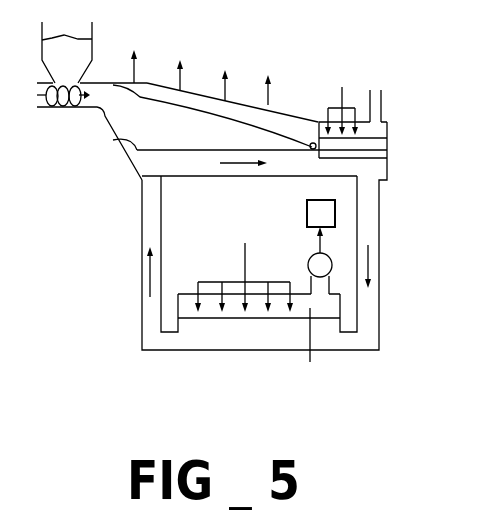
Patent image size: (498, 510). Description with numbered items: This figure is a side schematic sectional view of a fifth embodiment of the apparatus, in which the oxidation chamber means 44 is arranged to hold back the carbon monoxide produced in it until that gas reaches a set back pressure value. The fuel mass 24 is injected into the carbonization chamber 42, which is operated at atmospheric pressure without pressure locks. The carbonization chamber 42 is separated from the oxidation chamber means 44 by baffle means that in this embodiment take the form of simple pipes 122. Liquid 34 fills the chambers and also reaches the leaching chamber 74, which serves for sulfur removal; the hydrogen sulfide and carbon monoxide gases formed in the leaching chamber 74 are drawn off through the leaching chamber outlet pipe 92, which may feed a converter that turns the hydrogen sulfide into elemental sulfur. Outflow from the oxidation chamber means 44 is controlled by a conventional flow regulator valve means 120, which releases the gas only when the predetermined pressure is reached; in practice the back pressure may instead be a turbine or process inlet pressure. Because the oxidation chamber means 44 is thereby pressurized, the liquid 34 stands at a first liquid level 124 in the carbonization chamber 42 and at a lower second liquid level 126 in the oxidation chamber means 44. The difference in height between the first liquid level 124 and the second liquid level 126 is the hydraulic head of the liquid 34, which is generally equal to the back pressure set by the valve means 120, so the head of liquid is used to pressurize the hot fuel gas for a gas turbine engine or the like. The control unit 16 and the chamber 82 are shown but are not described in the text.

The control unit 16 is at (321, 226).
The fuel mass 24 is at (160, 133).
The liquid 34 is at (247, 164).
The carbonization chamber 42 is at (282, 122).
The oxidation chamber means 44 is at (316, 352).
The leaching chamber 74 is at (378, 128).
The lower chamber 82 is at (380, 145).
The leaching chamber outlet pipe 92 is at (383, 100).
The flow regulator valve means 120 is at (308, 258).
The pipes 122 is at (140, 210).
The first liquid level 124 is at (110, 143).
The second liquid level 126 is at (333, 318).